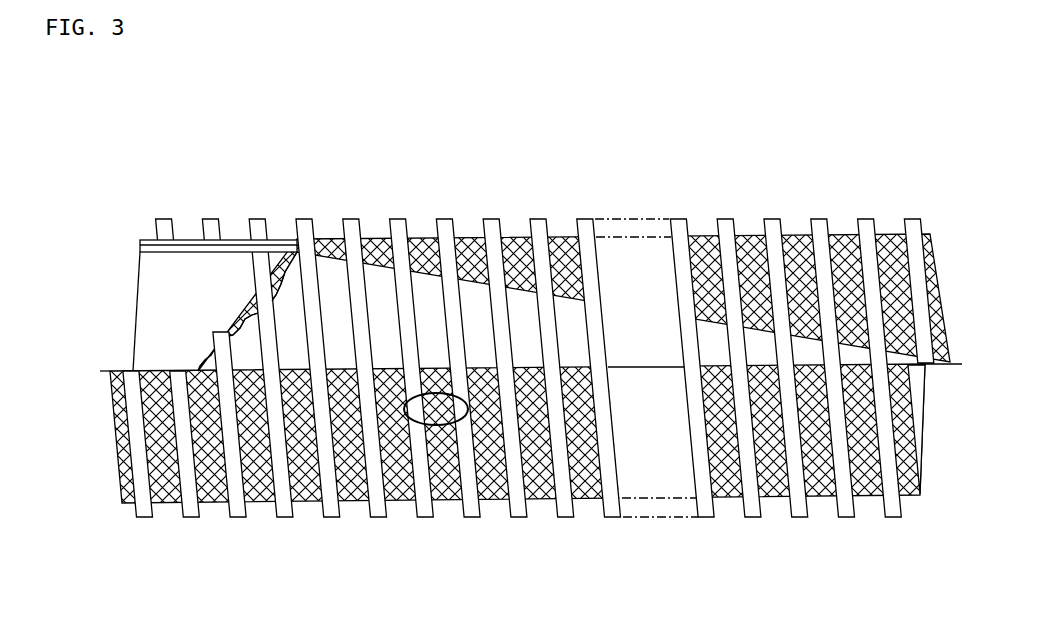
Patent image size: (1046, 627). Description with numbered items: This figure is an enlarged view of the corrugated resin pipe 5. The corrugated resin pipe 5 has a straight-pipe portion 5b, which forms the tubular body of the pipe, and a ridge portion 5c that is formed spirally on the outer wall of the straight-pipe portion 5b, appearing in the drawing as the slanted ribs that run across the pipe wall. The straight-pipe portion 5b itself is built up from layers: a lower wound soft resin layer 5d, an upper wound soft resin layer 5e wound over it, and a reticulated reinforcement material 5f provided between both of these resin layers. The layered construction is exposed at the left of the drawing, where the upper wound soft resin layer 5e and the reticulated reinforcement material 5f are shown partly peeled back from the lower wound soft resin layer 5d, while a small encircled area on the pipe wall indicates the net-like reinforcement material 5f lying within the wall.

The corrugated resin pipe 5 is at (513, 325).
The straight-pipe portion 5b is at (423, 226).
The ridge portion 5c is at (343, 232).
The lower wound soft resin layer 5d is at (223, 253).
The upper wound soft resin layer 5e is at (237, 239).
The reticulated reinforcement material 5f is at (140, 244).